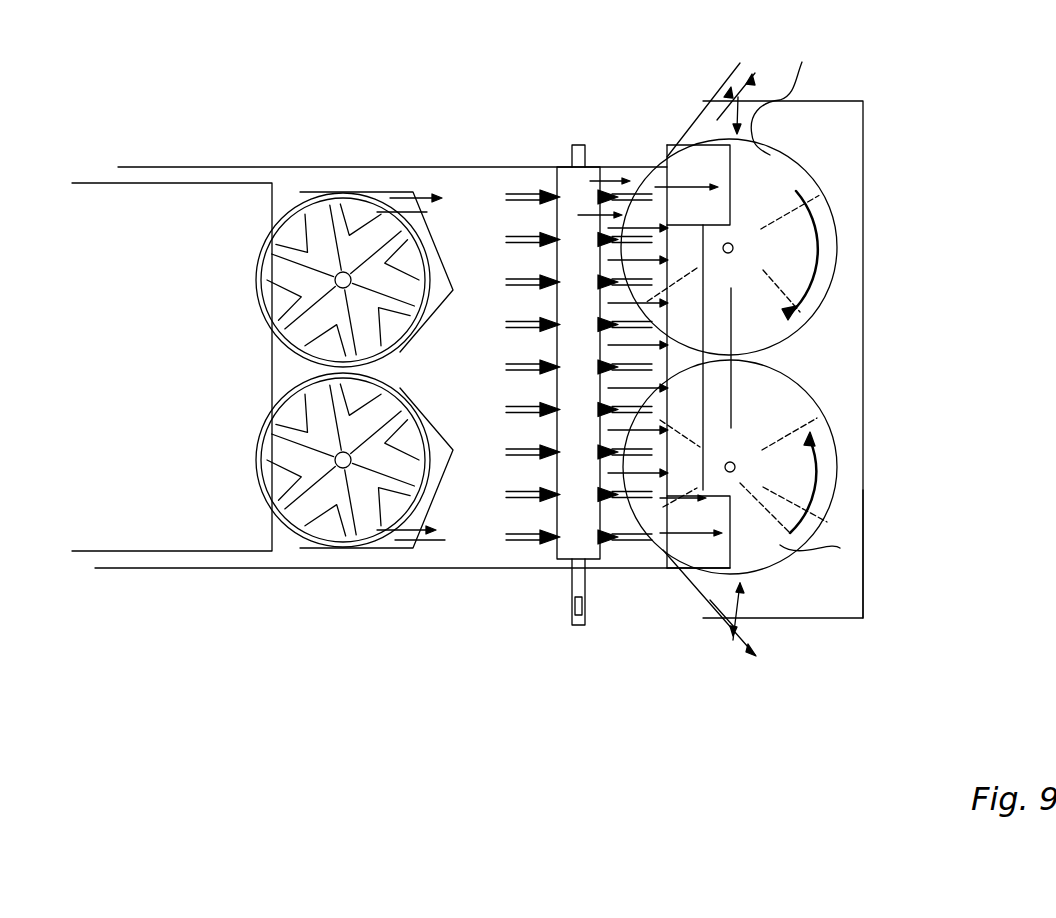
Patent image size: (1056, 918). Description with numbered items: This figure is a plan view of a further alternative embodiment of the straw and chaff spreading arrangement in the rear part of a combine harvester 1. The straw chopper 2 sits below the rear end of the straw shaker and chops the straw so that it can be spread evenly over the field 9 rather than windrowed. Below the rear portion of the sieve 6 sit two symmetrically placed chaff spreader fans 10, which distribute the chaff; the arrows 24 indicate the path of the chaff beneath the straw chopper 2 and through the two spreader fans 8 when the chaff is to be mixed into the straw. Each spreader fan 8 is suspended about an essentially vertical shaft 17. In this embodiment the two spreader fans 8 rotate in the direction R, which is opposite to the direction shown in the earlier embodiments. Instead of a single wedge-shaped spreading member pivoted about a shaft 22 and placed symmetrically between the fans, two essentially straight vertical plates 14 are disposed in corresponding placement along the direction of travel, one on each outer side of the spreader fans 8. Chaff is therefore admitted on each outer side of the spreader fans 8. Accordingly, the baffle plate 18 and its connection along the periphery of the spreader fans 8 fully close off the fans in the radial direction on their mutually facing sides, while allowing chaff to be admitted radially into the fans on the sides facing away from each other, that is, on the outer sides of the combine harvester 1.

The combine harvester 1 is at (197, 140).
The straw chopper 2 is at (551, 580).
The sieve 6 is at (163, 525).
The spreader fan 8 is at (862, 154).
The field 9 is at (848, 497).
The chaff spreader fan 10 is at (342, 200).
The vertical plate 14 is at (742, 673).
The shaft 17 is at (840, 527).
The baffle plate 18 is at (628, 540).
The shaft 22 is at (665, 158).
The arrows 24 is at (425, 205).
The direction of rotation R is at (865, 236).